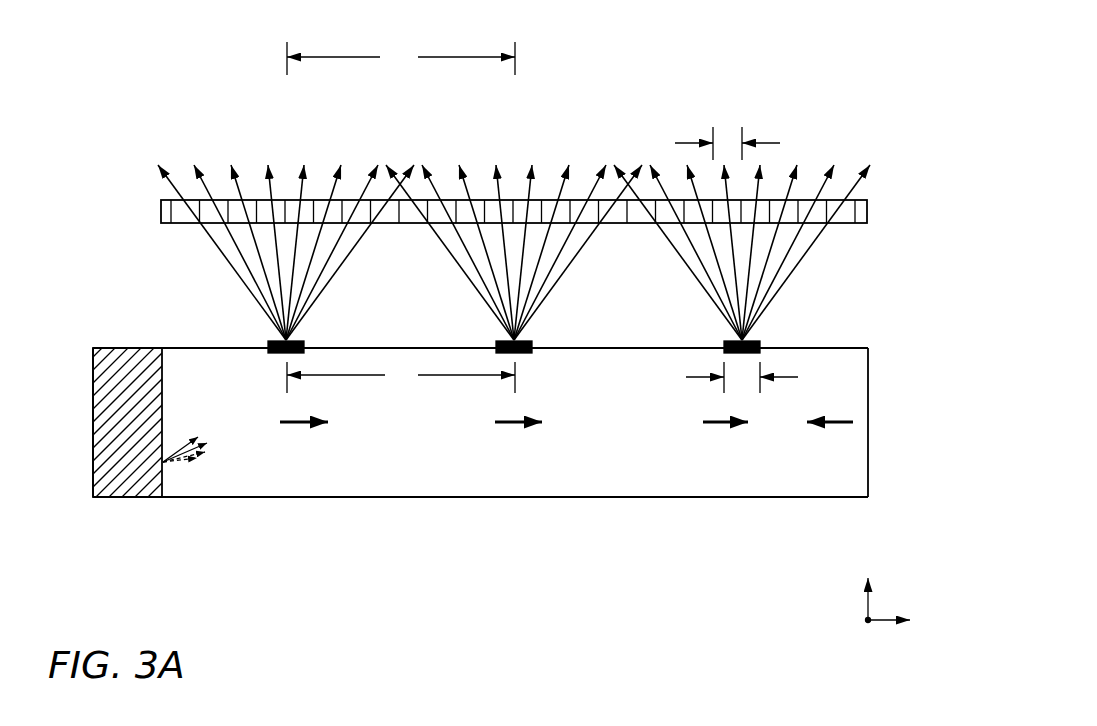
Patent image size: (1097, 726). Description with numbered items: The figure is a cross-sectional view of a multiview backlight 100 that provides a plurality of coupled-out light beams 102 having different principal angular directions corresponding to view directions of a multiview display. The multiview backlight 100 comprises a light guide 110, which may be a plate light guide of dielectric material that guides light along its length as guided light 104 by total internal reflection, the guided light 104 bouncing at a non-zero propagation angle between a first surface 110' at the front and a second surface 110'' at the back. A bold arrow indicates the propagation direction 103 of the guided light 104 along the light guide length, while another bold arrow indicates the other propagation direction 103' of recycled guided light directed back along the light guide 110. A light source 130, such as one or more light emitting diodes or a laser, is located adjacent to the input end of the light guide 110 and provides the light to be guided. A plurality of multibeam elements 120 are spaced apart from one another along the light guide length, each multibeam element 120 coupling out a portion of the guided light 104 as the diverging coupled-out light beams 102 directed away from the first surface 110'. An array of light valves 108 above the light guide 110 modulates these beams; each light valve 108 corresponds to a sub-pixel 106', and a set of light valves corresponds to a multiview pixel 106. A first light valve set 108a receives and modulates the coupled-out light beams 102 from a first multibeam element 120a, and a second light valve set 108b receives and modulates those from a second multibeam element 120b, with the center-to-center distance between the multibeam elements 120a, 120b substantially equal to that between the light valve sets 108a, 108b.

The multiview backlight 100 is at (160, 255).
The coupled-out light beams 102 is at (872, 243).
The propagation direction 103 is at (557, 477).
The other propagation direction 103' is at (780, 477).
The guided light 104 is at (195, 467).
The multiview pixel 106 is at (489, 202).
The sub-pixel 106' is at (755, 207).
The light valve 108 is at (148, 205).
The first light valve set 108a is at (400, 152).
The second light valve set 108b is at (628, 152).
The light guide 110 is at (480, 428).
The first surface 110' is at (519, 330).
The second surface 110'' is at (522, 515).
The multibeam element 120 is at (250, 325).
The first multibeam element 120a is at (322, 325).
The second multibeam element 120b is at (550, 327).
The light source 130 is at (127, 507).